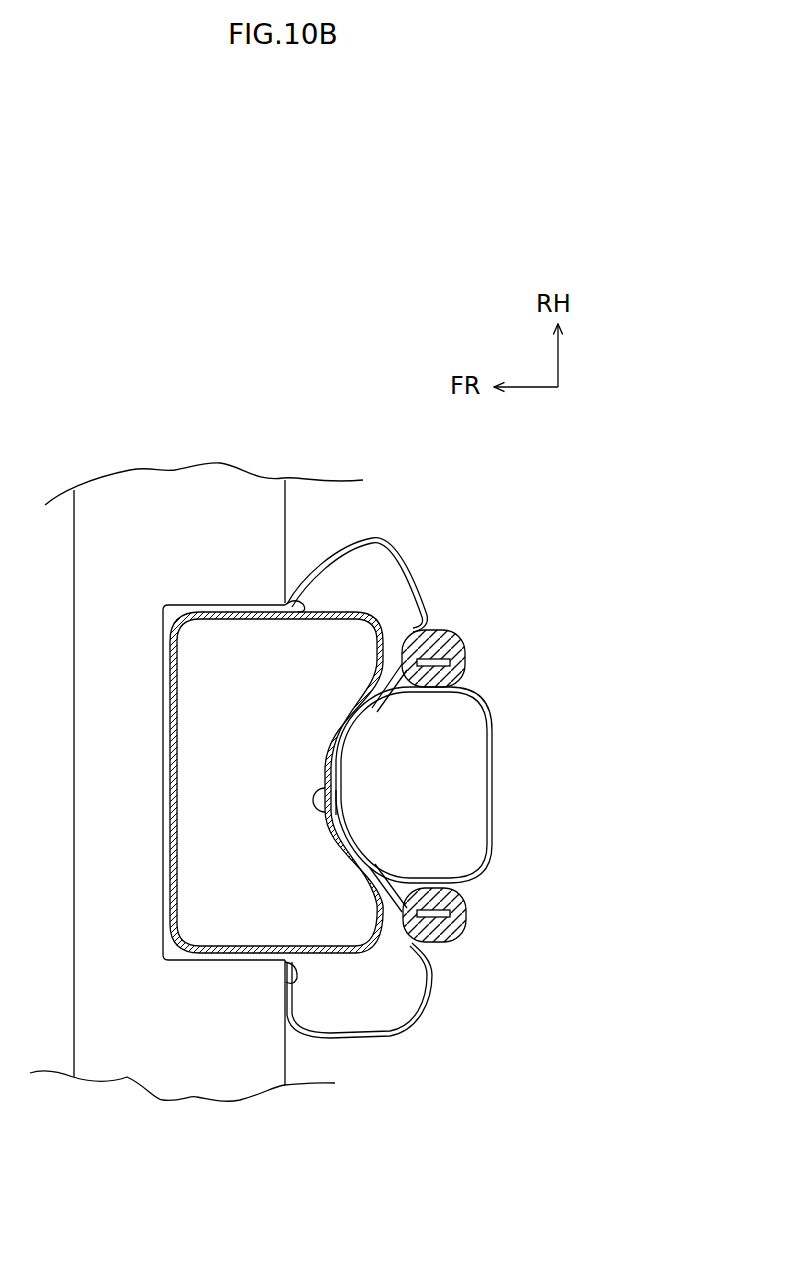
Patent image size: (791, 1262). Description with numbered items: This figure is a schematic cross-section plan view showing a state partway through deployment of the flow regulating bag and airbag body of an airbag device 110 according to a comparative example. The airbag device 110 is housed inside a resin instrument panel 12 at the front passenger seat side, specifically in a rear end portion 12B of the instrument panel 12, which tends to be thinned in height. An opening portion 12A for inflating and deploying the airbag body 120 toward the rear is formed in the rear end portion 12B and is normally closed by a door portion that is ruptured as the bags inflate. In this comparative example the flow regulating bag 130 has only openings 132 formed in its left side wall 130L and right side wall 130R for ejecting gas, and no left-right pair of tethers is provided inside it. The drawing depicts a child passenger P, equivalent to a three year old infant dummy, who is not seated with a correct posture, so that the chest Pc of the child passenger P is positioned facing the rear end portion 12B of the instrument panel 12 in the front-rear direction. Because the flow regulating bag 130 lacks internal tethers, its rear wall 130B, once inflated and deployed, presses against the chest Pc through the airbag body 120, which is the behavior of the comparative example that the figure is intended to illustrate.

The instrument panel 12 is at (167, 508).
The opening portion 12A is at (287, 982).
The rear end portion 12B is at (287, 1047).
The airbag device 110 is at (363, 512).
The airbag body 120 is at (383, 543).
The flow regulating bag 130 is at (380, 625).
The right side wall 130R is at (340, 612).
The left side wall 130L is at (347, 952).
The rear wall 130B is at (340, 760).
The openings 132 is at (282, 601).
The child passenger P is at (496, 782).
The chest Pc is at (337, 812).